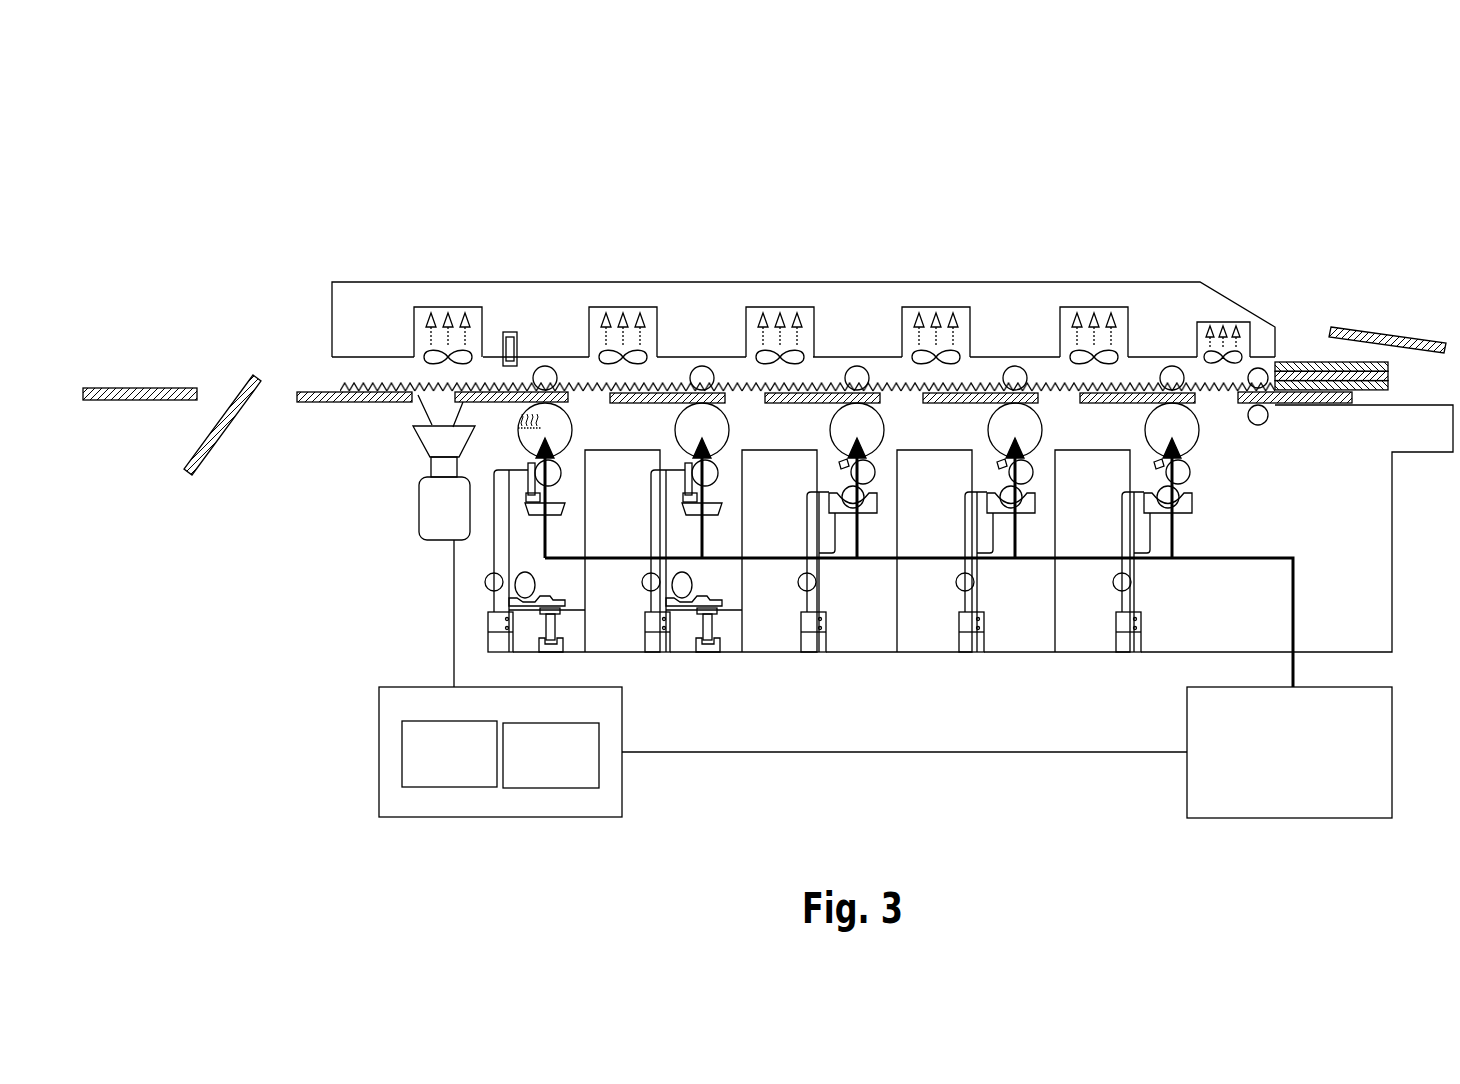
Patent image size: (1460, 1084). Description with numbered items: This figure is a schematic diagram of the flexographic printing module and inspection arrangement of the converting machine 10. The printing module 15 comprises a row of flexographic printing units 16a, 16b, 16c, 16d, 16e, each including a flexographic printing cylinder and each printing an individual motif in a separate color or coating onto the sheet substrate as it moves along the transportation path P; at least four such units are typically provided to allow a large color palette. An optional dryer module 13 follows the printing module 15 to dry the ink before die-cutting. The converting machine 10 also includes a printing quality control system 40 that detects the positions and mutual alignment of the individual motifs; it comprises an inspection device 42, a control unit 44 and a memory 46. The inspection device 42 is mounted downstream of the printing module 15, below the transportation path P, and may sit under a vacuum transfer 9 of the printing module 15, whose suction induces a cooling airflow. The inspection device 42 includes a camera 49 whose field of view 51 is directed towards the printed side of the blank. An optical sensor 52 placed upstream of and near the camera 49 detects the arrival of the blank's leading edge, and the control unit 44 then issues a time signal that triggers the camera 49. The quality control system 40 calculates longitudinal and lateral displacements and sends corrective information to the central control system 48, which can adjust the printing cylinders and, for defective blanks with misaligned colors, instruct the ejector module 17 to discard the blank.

The converting machine 10 is at (854, 108).
The printing module 15 is at (446, 191).
The vacuum transfer 9 is at (417, 325).
The dryer module 13 is at (484, 398).
The optical sensor 52 is at (517, 333).
The flexographic printing unit 16e is at (544, 253).
The flexographic printing unit 16d is at (709, 253).
The flexographic printing unit 16c is at (938, 253).
The flexographic printing unit 16b is at (1093, 253).
The flexographic printing unit 16a is at (1238, 253).
The transportation path P is at (897, 386).
The ejector module 17 is at (229, 338).
The field of view 51 is at (423, 401).
The inspection device 42 is at (388, 540).
The camera 49 is at (433, 530).
The printing quality control system 40 is at (291, 713).
The control unit 44 is at (449, 754).
The memory 46 is at (551, 755).
The central control system 48 is at (1289, 752).